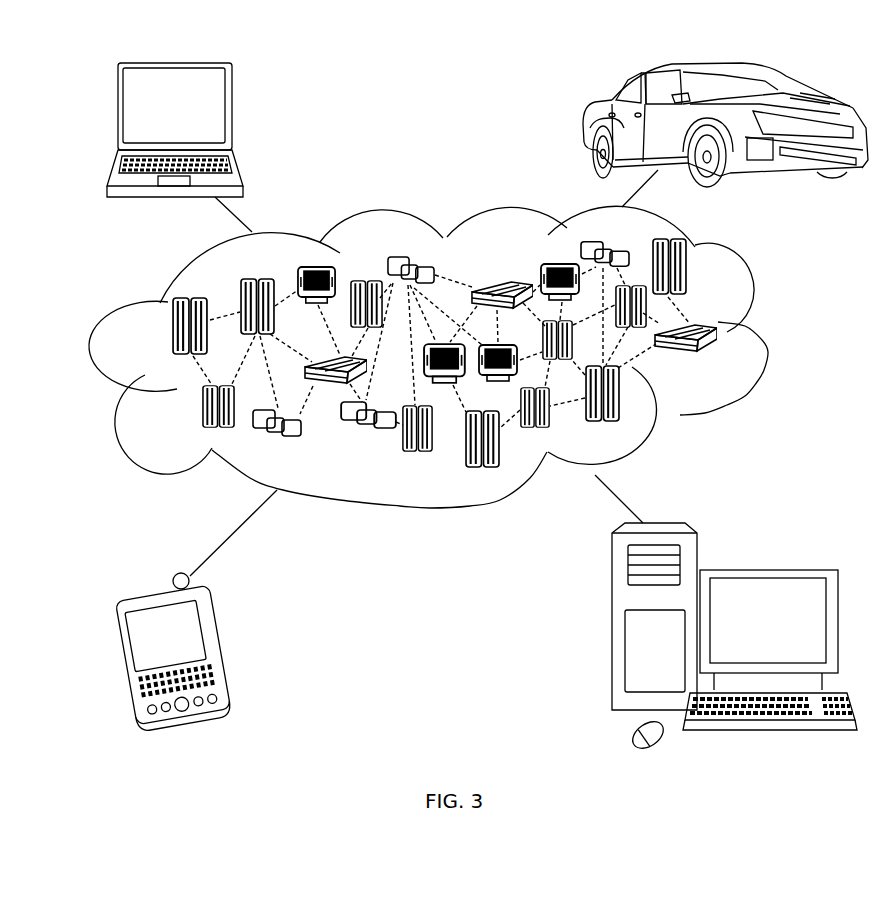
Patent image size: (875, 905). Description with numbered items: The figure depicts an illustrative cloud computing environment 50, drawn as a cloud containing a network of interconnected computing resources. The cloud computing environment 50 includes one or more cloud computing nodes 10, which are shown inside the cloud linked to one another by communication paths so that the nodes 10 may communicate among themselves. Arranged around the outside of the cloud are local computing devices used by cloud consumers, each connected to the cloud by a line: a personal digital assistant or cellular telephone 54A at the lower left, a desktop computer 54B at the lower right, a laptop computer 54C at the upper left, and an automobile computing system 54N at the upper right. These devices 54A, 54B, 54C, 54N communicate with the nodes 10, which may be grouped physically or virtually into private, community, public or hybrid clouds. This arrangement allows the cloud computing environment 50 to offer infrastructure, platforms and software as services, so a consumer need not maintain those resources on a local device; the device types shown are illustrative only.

The cloud computing nodes 10 is at (722, 362).
The cloud computing environment 50 is at (768, 337).
The personal digital assistant (PDA) or cellular telephone 54A is at (224, 648).
The desktop computer 54B is at (767, 568).
The laptop computer 54C is at (232, 113).
The automobile computing system 54N is at (587, 127).